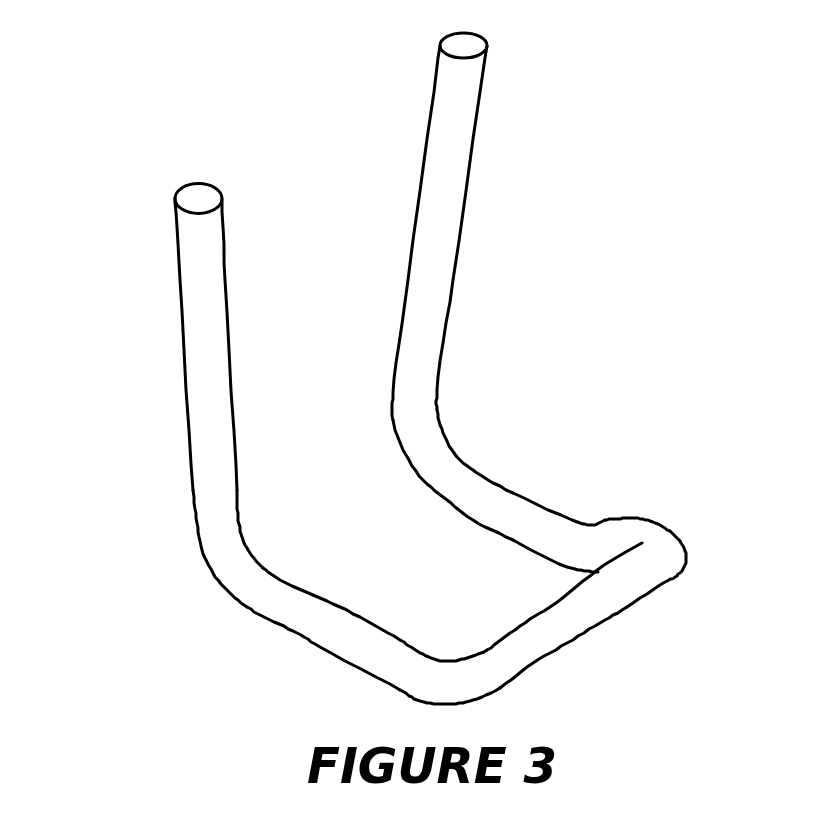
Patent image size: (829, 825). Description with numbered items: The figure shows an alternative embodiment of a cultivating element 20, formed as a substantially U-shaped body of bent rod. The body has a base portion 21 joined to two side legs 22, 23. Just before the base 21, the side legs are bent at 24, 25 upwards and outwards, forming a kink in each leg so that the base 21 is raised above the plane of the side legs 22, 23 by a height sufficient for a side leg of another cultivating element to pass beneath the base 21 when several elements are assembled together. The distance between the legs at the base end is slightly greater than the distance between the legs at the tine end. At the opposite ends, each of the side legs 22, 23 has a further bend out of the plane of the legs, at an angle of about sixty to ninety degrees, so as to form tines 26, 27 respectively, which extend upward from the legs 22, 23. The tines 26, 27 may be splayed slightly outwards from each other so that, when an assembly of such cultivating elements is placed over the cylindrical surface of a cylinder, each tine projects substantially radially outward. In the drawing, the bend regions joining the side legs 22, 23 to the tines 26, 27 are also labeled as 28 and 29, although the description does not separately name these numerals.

The cultivating element 20 is at (663, 423).
The base portion 21 is at (615, 597).
The side leg 22 is at (520, 508).
The side leg 23 is at (318, 633).
The bend 24 is at (623, 533).
The bend 25 is at (432, 683).
The tine 26 is at (458, 143).
The tine 27 is at (200, 362).
The first arm bend 28 is at (418, 443).
The second arm bend 29 is at (228, 550).